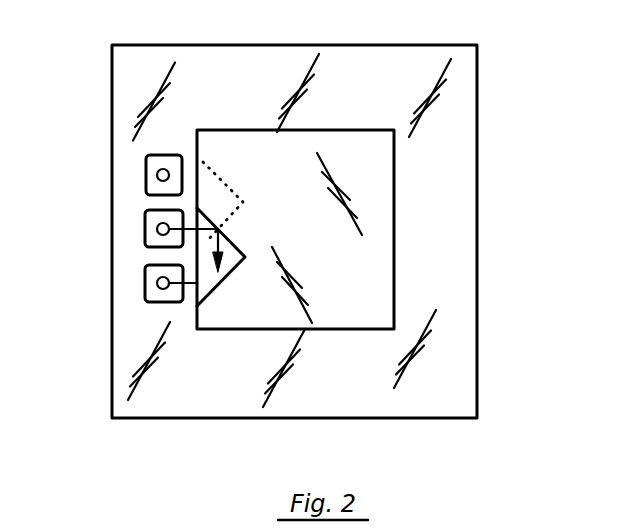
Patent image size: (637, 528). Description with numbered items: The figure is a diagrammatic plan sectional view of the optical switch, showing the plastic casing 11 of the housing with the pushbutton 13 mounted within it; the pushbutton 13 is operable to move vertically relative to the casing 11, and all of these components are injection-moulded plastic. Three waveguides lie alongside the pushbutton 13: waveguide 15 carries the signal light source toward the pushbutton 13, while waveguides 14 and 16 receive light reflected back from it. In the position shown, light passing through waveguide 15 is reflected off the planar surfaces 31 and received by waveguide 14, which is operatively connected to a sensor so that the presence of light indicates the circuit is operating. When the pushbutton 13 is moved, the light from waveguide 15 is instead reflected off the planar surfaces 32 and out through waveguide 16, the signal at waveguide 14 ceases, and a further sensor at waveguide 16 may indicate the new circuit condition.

The casing 11 is at (478, 110).
The pushbutton 13 is at (382, 248).
The waveguide 14 is at (157, 279).
The waveguide 15 is at (157, 224).
The waveguide 16 is at (157, 172).
The planar surfaces 31 is at (230, 272).
The planar surfaces 32 is at (229, 188).